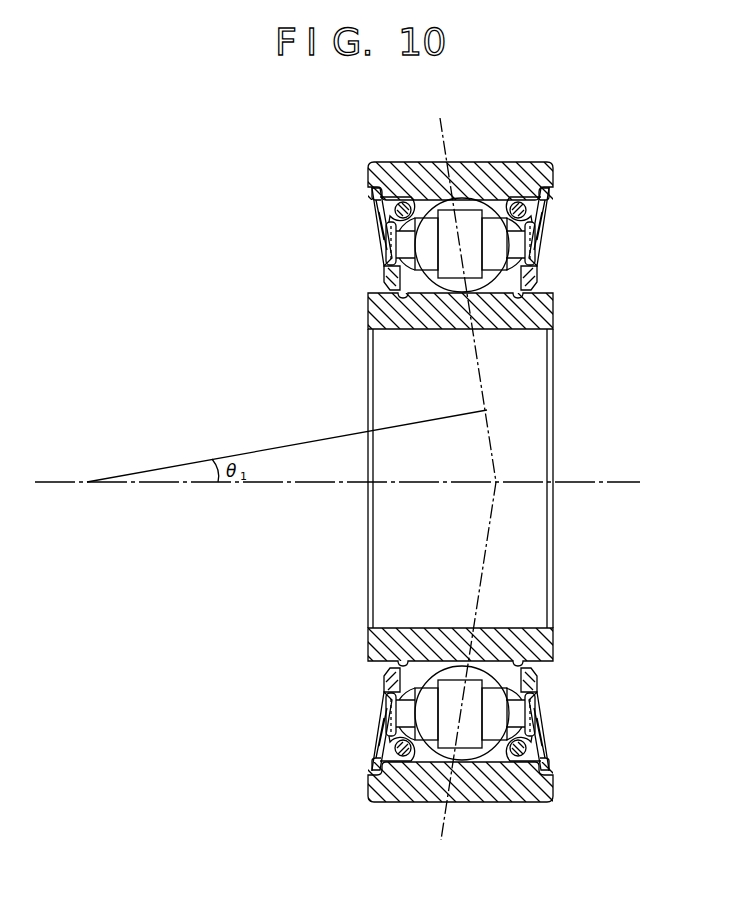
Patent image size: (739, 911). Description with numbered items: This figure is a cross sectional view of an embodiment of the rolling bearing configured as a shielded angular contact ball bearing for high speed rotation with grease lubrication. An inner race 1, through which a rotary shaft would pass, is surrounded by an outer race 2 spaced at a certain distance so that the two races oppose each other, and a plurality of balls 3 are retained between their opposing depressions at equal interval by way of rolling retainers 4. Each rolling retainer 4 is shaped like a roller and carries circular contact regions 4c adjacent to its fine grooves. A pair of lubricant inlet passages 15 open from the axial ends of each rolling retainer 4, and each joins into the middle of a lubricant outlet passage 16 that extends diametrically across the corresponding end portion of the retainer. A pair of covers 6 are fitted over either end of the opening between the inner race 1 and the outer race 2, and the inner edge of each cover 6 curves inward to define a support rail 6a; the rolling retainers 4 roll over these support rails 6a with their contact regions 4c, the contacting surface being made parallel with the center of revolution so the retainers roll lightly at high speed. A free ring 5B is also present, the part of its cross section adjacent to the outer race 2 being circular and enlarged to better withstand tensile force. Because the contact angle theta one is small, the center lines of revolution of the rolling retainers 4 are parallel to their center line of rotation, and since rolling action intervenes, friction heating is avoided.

The inner race 1 is at (370, 322).
The outer race 2 is at (530, 162).
The balls 3 is at (465, 162).
The rolling retainer 4 is at (448, 248).
The contact region 4c is at (384, 231).
The free ring 5B is at (376, 193).
The cover 6 is at (368, 213).
The support rail 6a is at (372, 282).
The lubricant inlet passage 15 is at (386, 243).
The lubricant outlet passage 16 is at (548, 213).